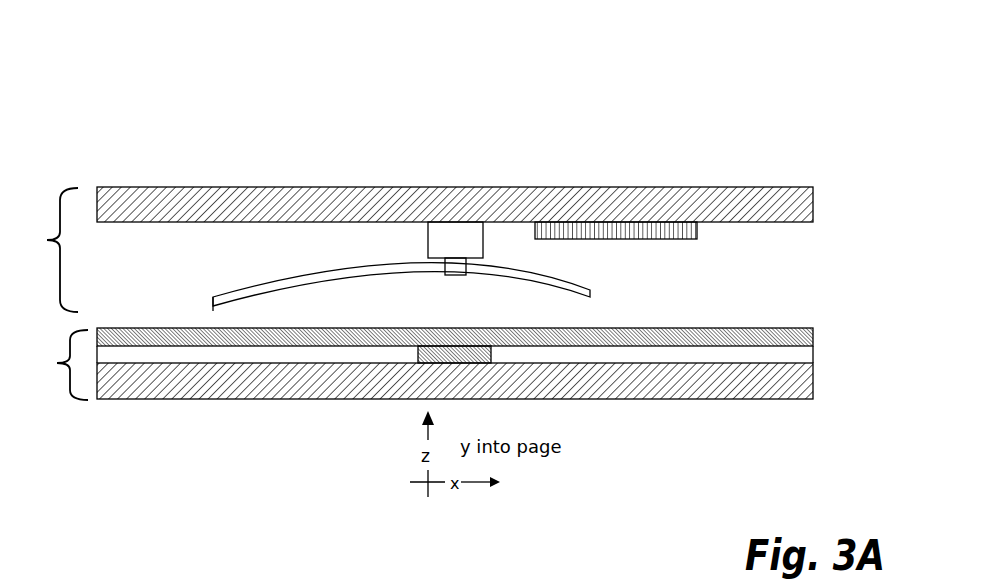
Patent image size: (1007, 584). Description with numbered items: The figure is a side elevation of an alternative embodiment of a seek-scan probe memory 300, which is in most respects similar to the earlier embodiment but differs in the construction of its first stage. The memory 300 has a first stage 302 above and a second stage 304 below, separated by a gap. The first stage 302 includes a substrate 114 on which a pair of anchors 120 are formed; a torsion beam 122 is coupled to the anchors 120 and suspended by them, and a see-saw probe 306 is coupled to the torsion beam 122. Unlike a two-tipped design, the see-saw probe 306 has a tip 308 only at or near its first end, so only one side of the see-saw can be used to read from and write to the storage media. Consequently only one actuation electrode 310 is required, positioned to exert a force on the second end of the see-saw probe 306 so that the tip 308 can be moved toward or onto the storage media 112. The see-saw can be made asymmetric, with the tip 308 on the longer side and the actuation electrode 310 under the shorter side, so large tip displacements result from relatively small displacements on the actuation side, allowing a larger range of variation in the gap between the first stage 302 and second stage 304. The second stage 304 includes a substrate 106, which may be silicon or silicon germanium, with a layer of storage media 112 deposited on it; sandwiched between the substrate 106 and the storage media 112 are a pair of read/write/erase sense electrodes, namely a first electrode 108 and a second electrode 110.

The SSP memory 300 is at (661, 70).
The first stage 302 is at (40, 250).
The second stage 304 is at (45, 365).
The substrate 114 is at (812, 206).
The anchors 120 is at (437, 231).
The torsion beam 122 is at (458, 268).
The actuation electrode 310 is at (680, 236).
The see-saw probe 306 is at (398, 279).
The tip 308 is at (213, 311).
The storage media 112 is at (797, 335).
The second electrode 110 is at (805, 352).
The substrate 106 is at (805, 375).
The first electrode 108 is at (203, 356).